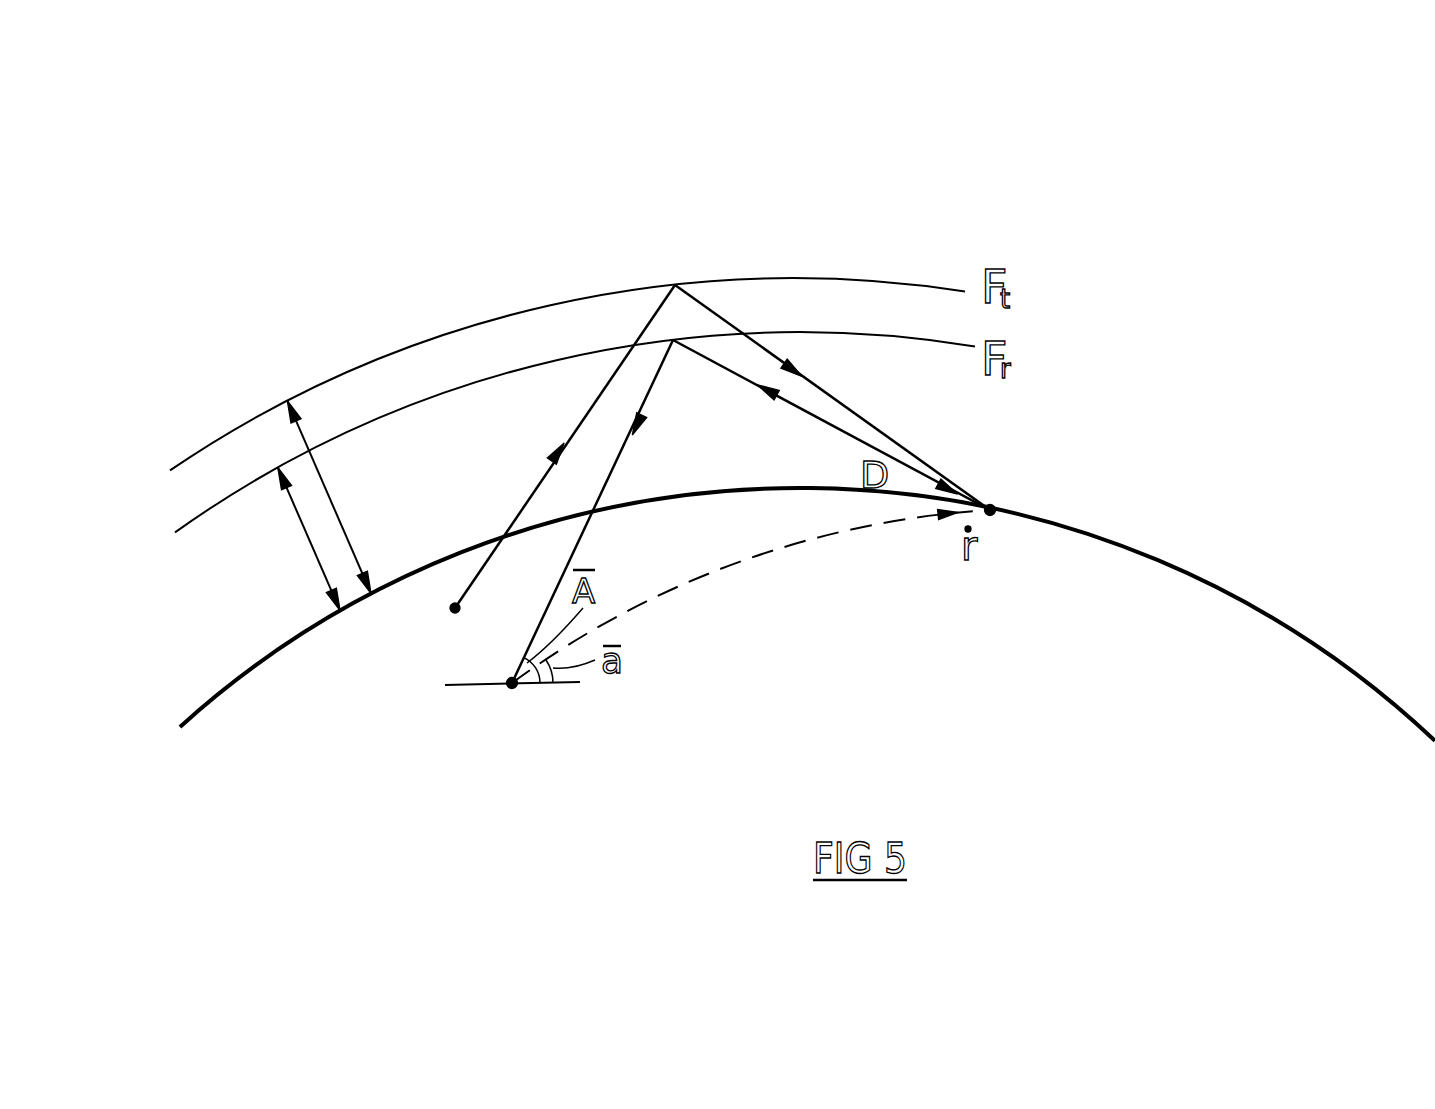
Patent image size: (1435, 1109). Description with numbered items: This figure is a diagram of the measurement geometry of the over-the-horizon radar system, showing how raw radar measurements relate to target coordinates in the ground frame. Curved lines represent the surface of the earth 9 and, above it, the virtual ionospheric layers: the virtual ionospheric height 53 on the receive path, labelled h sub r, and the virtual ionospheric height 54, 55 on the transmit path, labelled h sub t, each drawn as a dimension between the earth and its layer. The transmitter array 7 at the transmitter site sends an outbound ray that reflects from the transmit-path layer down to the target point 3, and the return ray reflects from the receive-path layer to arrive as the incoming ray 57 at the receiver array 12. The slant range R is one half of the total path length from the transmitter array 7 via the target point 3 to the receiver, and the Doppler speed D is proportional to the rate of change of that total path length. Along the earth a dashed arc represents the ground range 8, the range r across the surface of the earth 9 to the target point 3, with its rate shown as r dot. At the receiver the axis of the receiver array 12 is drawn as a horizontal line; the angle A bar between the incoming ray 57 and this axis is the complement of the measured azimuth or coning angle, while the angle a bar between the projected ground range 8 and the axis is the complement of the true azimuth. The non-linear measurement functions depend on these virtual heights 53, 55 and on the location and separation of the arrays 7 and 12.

The target 3 is at (995, 516).
The in-line array of transmitting antennas 7 is at (455, 608).
The ground range 8 is at (712, 573).
The surface of the earth 9 is at (1288, 627).
The in-line array of receiving antennas 12 is at (565, 684).
The virtual ionospheric height on the receive path 53 is at (307, 535).
The virtual ionospheric height on the transmit path 54 is at (847, 333).
The virtual ionospheric height on the transmit path 55 is at (351, 548).
The incoming ray 57 is at (613, 471).